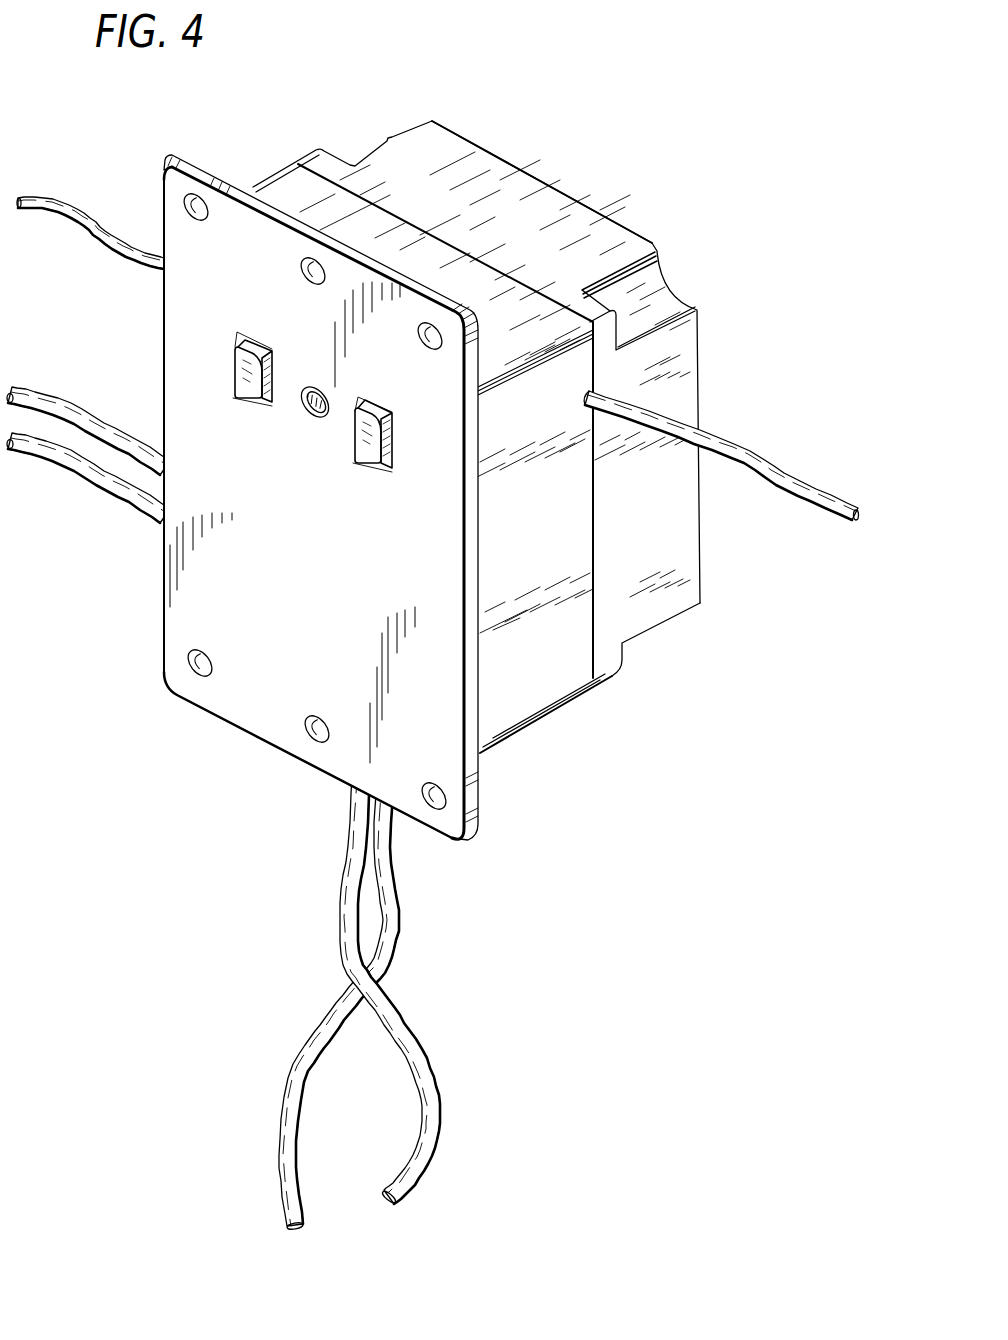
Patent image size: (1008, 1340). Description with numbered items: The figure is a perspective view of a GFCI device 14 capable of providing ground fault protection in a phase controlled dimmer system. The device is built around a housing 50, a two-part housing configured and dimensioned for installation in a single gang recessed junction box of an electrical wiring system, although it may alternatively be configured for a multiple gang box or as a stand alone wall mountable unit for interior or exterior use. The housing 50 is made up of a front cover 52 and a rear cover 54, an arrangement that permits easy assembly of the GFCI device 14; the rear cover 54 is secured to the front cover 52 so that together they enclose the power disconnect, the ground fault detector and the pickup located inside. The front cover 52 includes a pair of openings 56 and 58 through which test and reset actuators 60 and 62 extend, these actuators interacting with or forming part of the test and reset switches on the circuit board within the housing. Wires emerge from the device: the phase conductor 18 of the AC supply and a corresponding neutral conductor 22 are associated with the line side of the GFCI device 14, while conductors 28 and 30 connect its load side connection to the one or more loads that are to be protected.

The GFCI device 14 is at (640, 84).
The phase conductor 18 is at (283, 1163).
The neutral conductor 22 is at (425, 1140).
The conductor 28 is at (70, 476).
The conductor 30 is at (99, 430).
The housing 50 is at (641, 232).
The front cover 52 is at (545, 722).
The rear cover 54 is at (657, 627).
The opening 56 is at (392, 442).
The opening 58 is at (270, 371).
The test actuator 60 is at (355, 434).
The reset actuator 62 is at (235, 368).